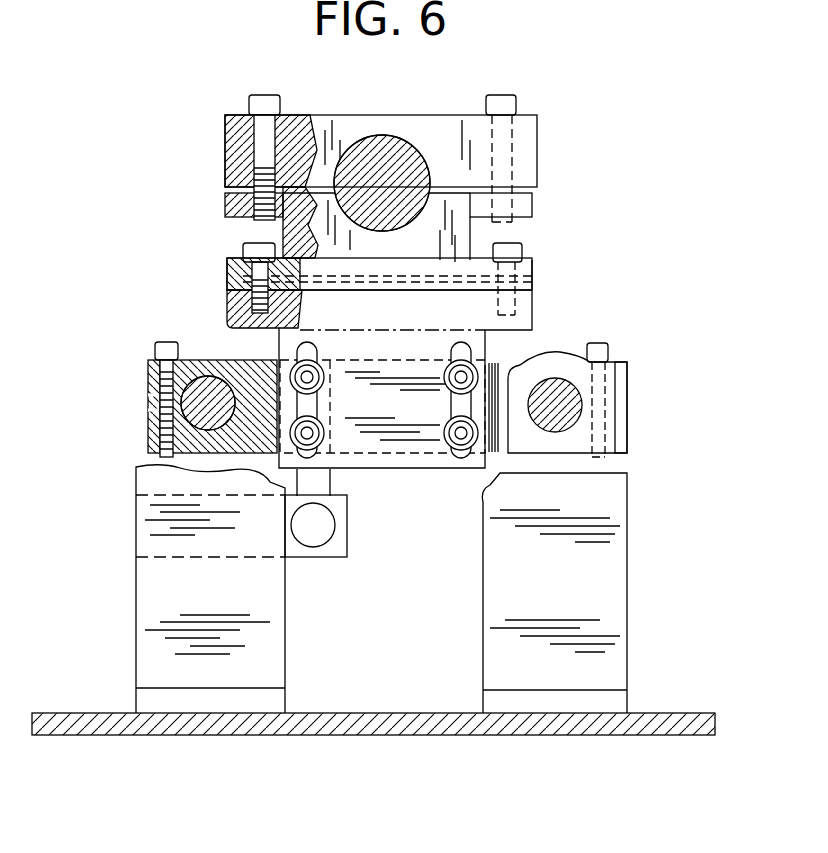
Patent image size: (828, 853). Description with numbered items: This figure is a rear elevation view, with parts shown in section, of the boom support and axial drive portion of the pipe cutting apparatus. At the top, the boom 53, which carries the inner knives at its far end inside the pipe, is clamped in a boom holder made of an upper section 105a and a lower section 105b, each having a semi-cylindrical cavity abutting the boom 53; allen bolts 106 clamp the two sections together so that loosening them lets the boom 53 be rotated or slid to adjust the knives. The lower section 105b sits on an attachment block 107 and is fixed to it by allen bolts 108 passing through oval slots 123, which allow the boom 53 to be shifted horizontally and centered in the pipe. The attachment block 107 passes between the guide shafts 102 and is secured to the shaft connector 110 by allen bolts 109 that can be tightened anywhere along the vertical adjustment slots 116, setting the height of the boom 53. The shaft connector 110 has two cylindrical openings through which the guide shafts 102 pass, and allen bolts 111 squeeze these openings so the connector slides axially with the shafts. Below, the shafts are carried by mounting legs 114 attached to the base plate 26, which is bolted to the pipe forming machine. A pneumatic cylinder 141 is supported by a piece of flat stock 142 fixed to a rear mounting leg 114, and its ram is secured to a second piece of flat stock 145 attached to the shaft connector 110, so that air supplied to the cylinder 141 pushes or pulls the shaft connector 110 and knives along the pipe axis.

The base plate 26 is at (343, 712).
The boom 53 is at (382, 183).
The guide shafts 102 is at (205, 403).
The upper section 105a is at (233, 160).
The lower section 105b is at (228, 198).
The allen bolts 106 is at (260, 100).
The attachment block 107 is at (230, 302).
The allen bolts 108 is at (246, 242).
The allen bolts 109 is at (452, 442).
The shaft connector 110 is at (243, 435).
The allen bolts 111 is at (155, 350).
The mounting legs 114 is at (158, 612).
The vertical adjustment slots 116 is at (297, 352).
The oval slots 123 is at (240, 268).
The pneumatic cylinder 141 is at (318, 530).
The flat stock 142 is at (310, 560).
The second piece of flat stock 145 is at (302, 484).